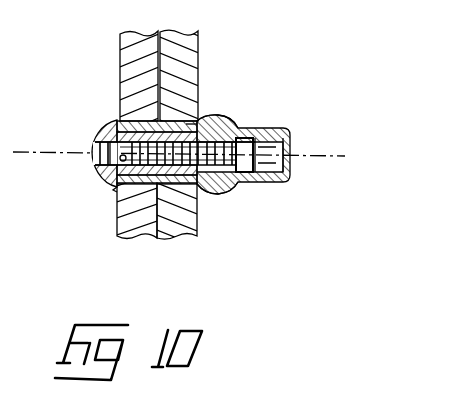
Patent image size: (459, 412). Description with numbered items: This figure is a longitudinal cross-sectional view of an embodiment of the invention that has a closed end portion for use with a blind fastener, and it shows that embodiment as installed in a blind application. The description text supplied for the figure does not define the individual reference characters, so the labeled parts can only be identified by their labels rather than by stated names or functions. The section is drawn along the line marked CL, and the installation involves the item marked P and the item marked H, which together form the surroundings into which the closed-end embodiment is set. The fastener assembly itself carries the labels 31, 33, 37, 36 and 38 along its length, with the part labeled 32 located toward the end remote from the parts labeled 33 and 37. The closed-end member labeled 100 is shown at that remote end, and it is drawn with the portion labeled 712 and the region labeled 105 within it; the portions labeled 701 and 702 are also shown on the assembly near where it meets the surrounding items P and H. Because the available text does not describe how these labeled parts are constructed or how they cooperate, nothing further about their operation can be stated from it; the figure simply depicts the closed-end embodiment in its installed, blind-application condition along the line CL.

The panel P is at (121, 44).
The hole H is at (157, 209).
The centerline CL is at (83, 152).
The bolt head 33 is at (115, 120).
The bolt body 31 is at (96, 181).
The retaining ring 37 is at (93, 160).
The head flange 702 is at (116, 188).
The washer 36 is at (192, 124).
The crimp 38 is at (214, 130).
The bolt end cavity 32 is at (243, 134).
The sleeve nut 100 is at (289, 133).
The sleeve end wall 712 is at (292, 146).
The bore 105 is at (283, 159).
The sleeve flange 701 is at (232, 186).